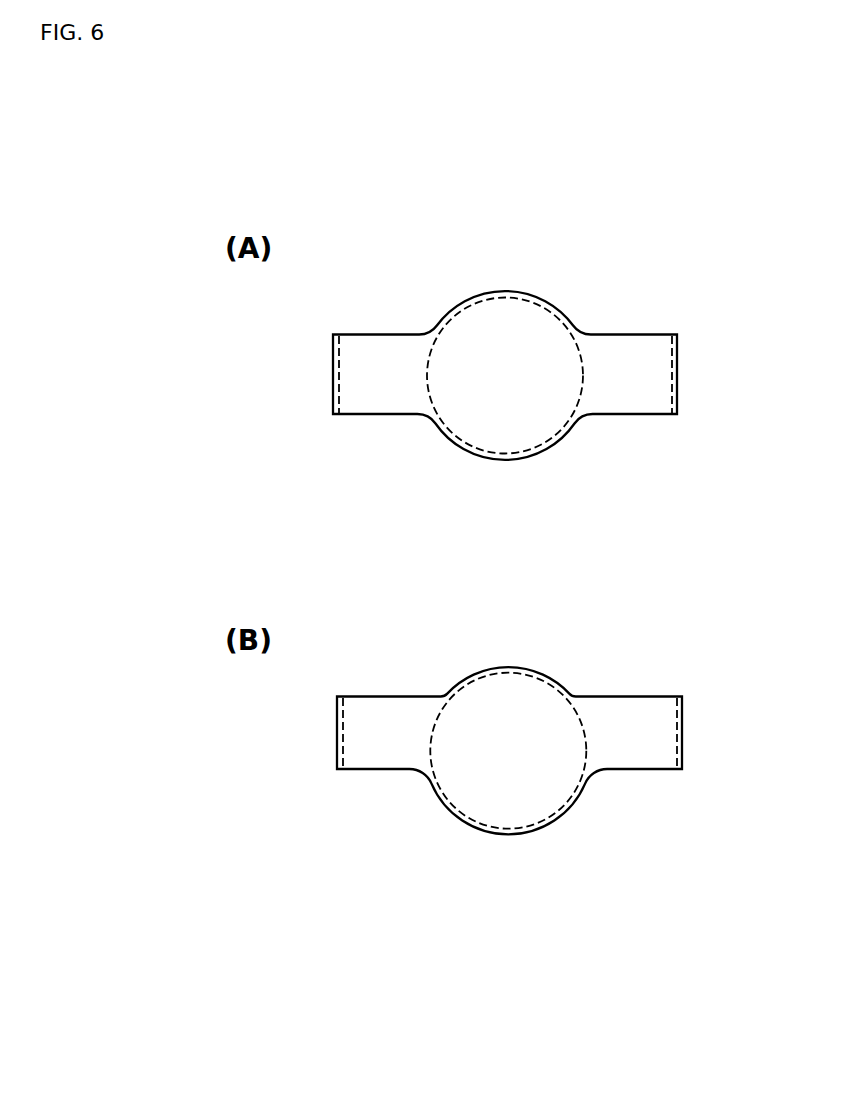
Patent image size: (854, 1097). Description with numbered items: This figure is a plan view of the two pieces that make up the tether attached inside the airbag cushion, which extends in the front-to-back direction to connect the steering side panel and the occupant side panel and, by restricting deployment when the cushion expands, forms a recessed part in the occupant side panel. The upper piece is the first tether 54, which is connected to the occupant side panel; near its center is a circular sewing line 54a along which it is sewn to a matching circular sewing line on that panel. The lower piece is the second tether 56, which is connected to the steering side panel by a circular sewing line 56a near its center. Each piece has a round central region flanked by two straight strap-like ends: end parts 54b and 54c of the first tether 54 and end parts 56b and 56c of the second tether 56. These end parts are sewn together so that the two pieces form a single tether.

The first tether 54 is at (546, 298).
The circular sewing line 54a is at (450, 319).
The end part 54b is at (339, 376).
The end part 54c is at (673, 364).
The second tether 56 is at (560, 684).
The circular sewing line 56a is at (442, 707).
The end part 56b is at (343, 743).
The end part 56c is at (678, 729).